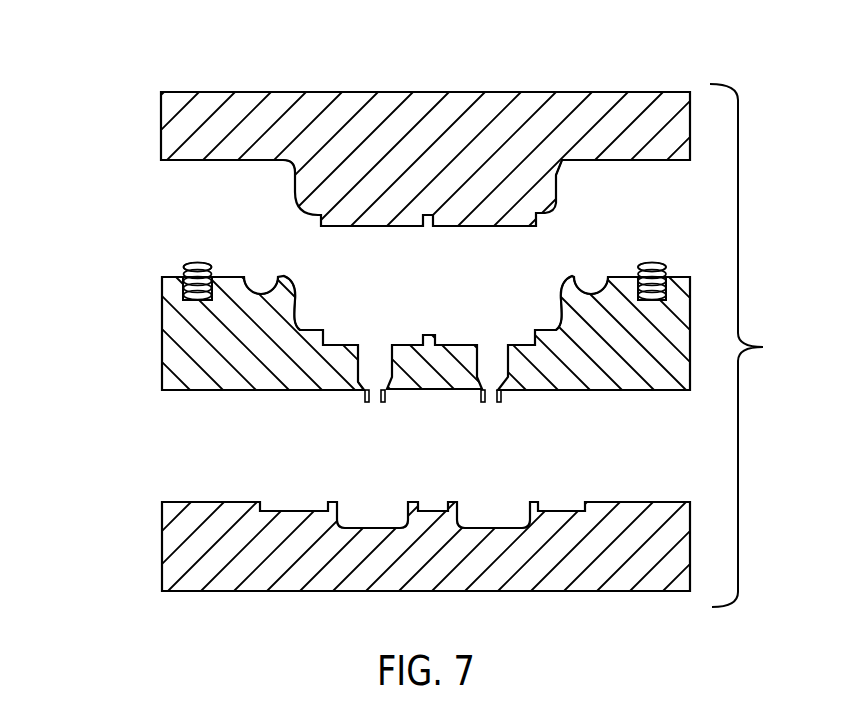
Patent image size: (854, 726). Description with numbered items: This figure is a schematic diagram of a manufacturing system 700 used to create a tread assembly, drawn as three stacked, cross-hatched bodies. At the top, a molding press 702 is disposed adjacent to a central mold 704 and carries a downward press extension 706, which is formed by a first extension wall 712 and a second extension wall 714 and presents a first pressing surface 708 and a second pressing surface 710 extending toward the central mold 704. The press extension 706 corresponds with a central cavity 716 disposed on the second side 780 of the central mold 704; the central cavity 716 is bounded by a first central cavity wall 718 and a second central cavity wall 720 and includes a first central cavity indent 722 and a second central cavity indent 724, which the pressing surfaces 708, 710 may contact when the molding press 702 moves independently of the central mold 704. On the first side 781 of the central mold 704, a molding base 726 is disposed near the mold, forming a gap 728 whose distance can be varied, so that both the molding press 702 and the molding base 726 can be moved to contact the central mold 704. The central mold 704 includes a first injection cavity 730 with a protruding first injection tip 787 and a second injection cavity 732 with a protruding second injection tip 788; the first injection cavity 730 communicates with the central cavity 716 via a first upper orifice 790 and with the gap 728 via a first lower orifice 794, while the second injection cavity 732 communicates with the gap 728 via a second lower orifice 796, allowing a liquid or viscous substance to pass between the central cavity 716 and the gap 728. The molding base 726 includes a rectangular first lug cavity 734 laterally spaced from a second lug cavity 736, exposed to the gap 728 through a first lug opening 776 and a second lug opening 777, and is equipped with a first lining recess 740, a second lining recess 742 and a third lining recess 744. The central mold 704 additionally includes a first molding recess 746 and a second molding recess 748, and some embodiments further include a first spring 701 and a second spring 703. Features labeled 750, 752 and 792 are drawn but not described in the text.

The manufacturing system 700 is at (216, 60).
The first spring 701 is at (665, 268).
The molding press 702 is at (160, 108).
The second spring 703 is at (198, 262).
The central mold 704 is at (160, 316).
The press extension 706 is at (333, 181).
The first pressing surface 708 is at (488, 228).
The second pressing surface 710 is at (350, 228).
The first extension wall 712 is at (557, 184).
The second extension wall 714 is at (292, 193).
The central cavity 716 is at (535, 262).
The first central cavity wall 718 is at (558, 320).
The second central cavity wall 720 is at (297, 318).
The first central cavity indent 722 is at (562, 368).
The second central cavity indent 724 is at (352, 355).
The molding base 726 is at (161, 551).
The gap 728 is at (178, 452).
The first injection cavity 730 is at (490, 355).
The second injection cavity 732 is at (375, 355).
The first lug cavity 734 is at (490, 505).
The second lug cavity 736 is at (365, 505).
The first lining recess 740 is at (290, 500).
The second lining recess 742 is at (567, 500).
The third lining recess 744 is at (432, 500).
The first molding recess 746 is at (590, 283).
The second molding recess 748 is at (260, 282).
The nub 750 is at (431, 214).
The nub 752 is at (430, 334).
The first lug opening 776 is at (510, 518).
The second lug opening 777 is at (390, 518).
The second side 780 is at (162, 267).
The first side 781 is at (657, 400).
The first injection tip 787 is at (483, 401).
The second injection tip 788 is at (367, 403).
The first upper orifice 790 is at (510, 356).
The edge 792 is at (332, 391).
The first lower orifice 794 is at (499, 402).
The second lower orifice 796 is at (384, 402).